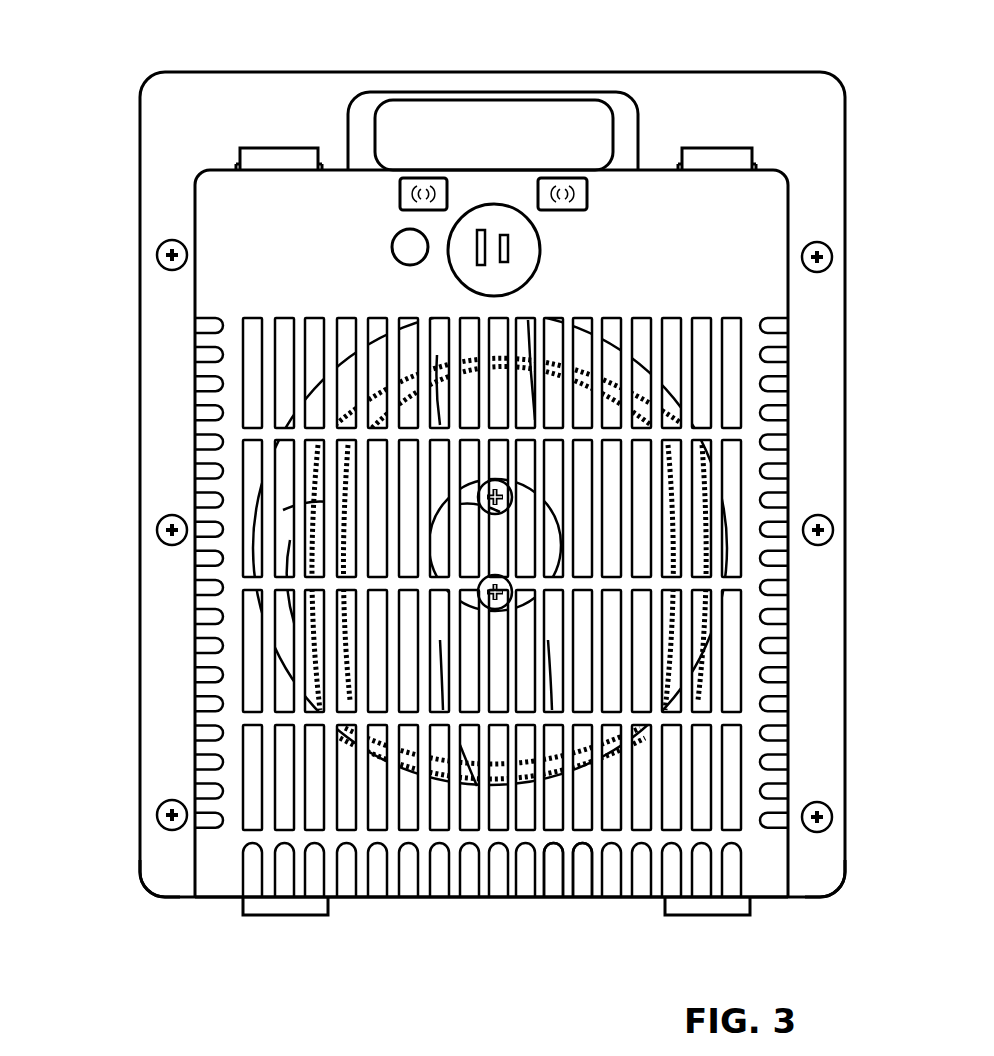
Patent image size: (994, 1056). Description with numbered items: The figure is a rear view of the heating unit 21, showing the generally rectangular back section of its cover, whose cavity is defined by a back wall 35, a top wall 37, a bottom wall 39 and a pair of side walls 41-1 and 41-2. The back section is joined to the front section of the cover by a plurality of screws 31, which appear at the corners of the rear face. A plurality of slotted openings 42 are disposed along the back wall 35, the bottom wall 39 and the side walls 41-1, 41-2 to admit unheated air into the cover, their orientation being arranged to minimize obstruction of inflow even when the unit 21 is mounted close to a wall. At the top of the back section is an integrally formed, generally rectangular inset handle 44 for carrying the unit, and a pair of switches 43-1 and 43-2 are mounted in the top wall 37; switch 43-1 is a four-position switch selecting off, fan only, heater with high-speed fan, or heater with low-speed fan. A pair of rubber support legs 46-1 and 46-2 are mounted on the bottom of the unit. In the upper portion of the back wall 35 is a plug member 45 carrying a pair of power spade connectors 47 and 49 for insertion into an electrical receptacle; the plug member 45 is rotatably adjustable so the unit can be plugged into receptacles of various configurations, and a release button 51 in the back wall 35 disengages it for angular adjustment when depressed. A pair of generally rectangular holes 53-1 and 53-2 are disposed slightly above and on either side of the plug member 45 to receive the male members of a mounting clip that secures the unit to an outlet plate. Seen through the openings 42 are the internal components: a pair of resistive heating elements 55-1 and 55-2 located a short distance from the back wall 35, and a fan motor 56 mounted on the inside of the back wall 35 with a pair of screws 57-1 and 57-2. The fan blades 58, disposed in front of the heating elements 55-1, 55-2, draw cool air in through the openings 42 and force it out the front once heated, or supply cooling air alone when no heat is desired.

The heating unit 21 is at (110, 104).
The screws 31 is at (160, 540).
The back wall 35 is at (727, 283).
The top wall 37 is at (650, 170).
The bottom wall 39 is at (219, 900).
The side wall 41-1 is at (193, 868).
The side wall 41-2 is at (790, 865).
The slotted openings 42 is at (735, 752).
The switch 43-1 is at (285, 148).
The switch 43-2 is at (735, 148).
The inset handle 44 is at (517, 105).
The plug member 45 is at (523, 262).
The rubber support leg 46-1 is at (305, 910).
The rubber support leg 46-2 is at (700, 918).
The power spade connector 47 is at (478, 252).
The power spade connector 49 is at (510, 250).
The release button 51 is at (392, 255).
The rectangular hole 53-1 is at (428, 180).
The rectangular hole 53-2 is at (565, 182).
The heating element 55-1 is at (556, 790).
The heating element 55-2 is at (589, 775).
The fan motor 56 is at (437, 528).
The screw 57-1 is at (515, 490).
The screw 57-2 is at (510, 598).
The fan blades 58 is at (720, 537).